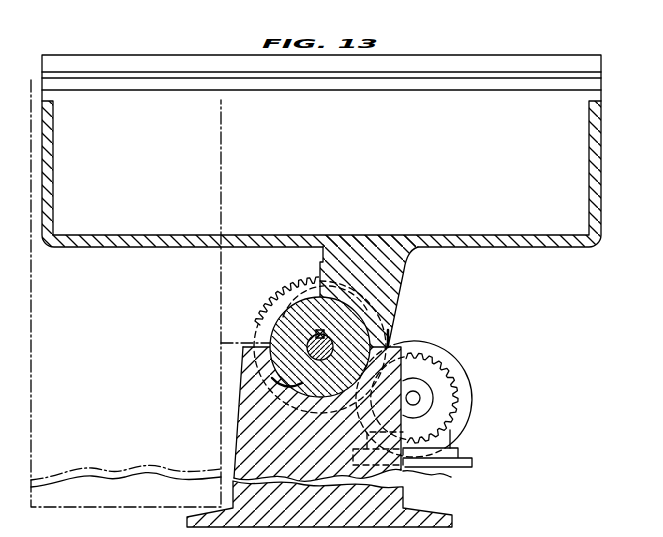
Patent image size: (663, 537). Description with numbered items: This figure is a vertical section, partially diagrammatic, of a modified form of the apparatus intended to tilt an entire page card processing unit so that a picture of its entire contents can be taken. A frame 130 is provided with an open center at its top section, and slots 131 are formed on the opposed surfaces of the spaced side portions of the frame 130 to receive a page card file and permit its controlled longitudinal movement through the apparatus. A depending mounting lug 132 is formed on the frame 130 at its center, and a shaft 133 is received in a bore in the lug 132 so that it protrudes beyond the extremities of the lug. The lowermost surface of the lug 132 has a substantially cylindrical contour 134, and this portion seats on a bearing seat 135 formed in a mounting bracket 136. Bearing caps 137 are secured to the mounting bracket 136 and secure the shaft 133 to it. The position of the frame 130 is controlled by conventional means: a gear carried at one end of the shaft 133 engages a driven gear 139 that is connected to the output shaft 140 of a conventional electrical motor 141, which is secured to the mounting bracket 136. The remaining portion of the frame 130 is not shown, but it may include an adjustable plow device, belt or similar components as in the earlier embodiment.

The frame 130 is at (145, 247).
The slots 131 is at (554, 77).
The depending mounting lug 132 is at (402, 279).
The shaft 133 is at (307, 341).
The cylindrical contour 134 is at (292, 367).
The bearing seat 135 is at (280, 381).
The mounting bracket 136 is at (238, 424).
The bearing caps 137 is at (389, 320).
The driven gear 139 is at (452, 380).
The output shaft 140 is at (416, 391).
The electrical motor 141 is at (473, 401).